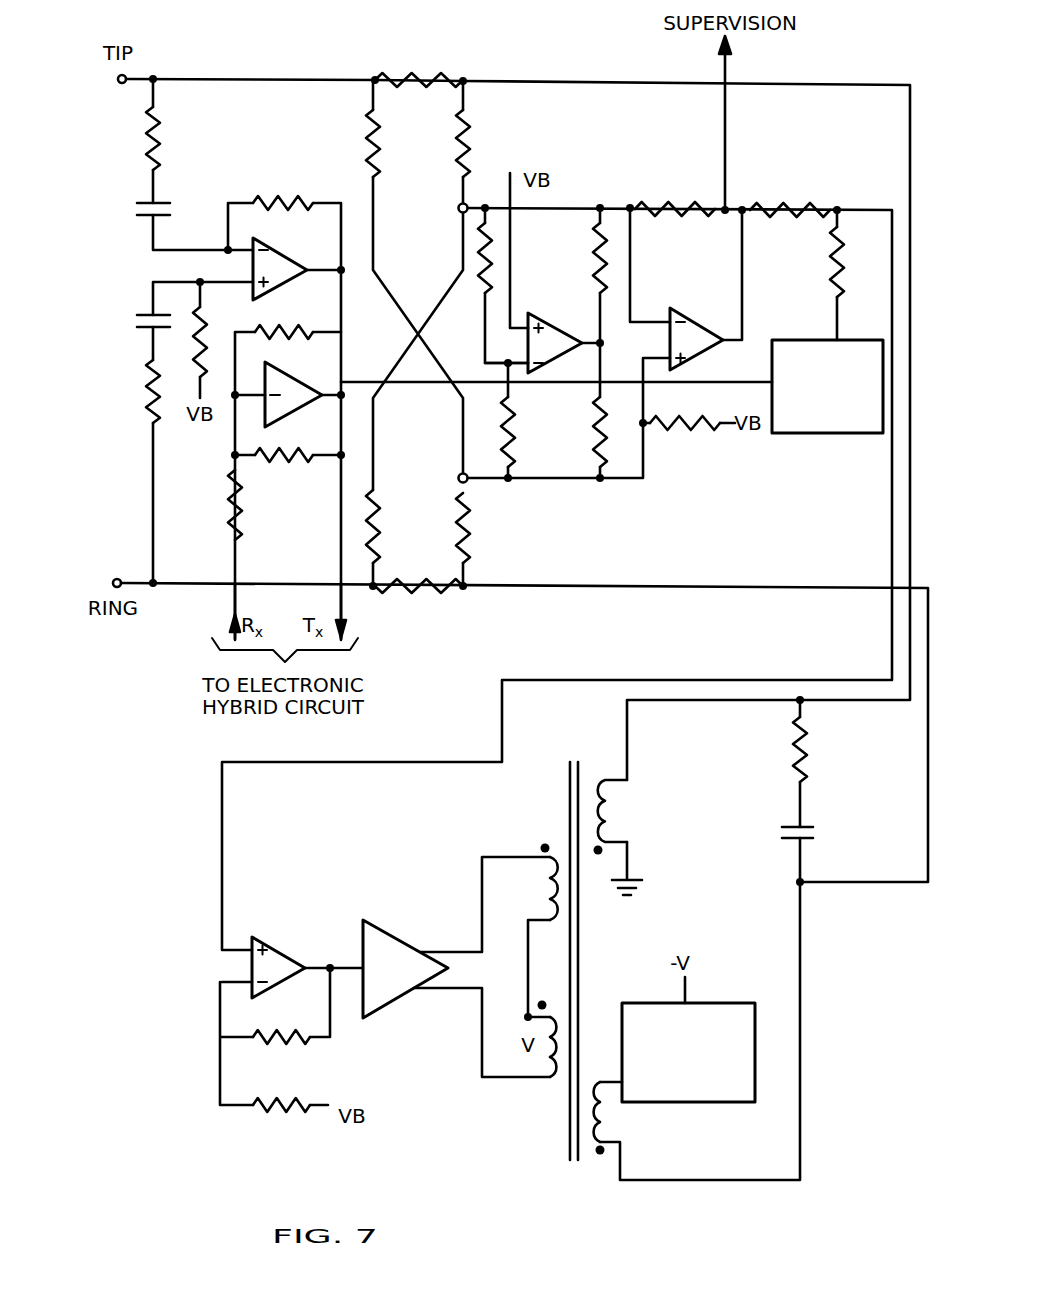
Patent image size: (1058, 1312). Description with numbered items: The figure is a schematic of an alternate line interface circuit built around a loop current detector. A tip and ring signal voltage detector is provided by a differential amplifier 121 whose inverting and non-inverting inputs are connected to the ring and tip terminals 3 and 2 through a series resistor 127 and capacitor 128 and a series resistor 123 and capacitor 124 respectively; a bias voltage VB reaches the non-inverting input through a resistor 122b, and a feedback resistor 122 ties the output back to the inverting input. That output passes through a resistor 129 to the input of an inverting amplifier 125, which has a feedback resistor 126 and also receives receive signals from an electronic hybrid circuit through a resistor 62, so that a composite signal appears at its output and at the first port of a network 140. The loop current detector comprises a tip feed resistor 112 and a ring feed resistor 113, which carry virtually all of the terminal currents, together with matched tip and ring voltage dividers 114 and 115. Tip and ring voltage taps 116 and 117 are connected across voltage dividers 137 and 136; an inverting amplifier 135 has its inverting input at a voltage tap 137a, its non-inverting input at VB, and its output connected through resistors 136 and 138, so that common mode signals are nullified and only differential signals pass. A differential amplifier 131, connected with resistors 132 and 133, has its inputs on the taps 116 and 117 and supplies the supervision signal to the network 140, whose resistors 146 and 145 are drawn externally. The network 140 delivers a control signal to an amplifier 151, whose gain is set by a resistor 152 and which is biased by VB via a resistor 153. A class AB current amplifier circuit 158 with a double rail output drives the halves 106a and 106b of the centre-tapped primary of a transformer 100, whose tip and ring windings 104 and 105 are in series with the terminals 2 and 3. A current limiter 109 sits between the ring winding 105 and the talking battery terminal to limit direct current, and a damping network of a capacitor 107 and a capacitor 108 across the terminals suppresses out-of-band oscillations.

The tip terminal 2 is at (119, 84).
The ring terminal 3 is at (119, 579).
The resistor 62 is at (231, 518).
The transformer 100 is at (623, 940).
The tip winding 104 is at (608, 800).
The ring winding 105 is at (604, 1107).
The primary winding half 106a is at (548, 872).
The primary winding half 106b is at (541, 1080).
The capacitor 107 is at (815, 833).
The capacitor 108 is at (793, 741).
The current limiter 109 is at (651, 1003).
The tip feed resistor 112 is at (430, 78).
The ring feed resistor 113 is at (424, 592).
The tip voltage divider 114 is at (457, 289).
The ring voltage divider 115 is at (409, 316).
The tip voltage tap 116 is at (457, 209).
The ring voltage tap 117 is at (458, 476).
The differential amplifier 121 is at (282, 261).
The feedback resistor 122 is at (297, 200).
The resistor 122b is at (205, 310).
The resistor 123 is at (148, 148).
The capacitor 124 is at (140, 216).
The inverting amplifier 125 is at (288, 386).
The feedback resistor 126 is at (268, 460).
The resistor 127 is at (147, 400).
The capacitor 128 is at (140, 327).
The resistor 129 is at (272, 330).
The differential amplifier 131 is at (704, 312).
The resistor 132 is at (697, 205).
The resistor 133 is at (699, 432).
The inverting amplifier 135 is at (528, 318).
The voltage divider 136 is at (597, 393).
The voltage divider 137 is at (510, 392).
The voltage tap 137a is at (506, 368).
The resistor 138 is at (595, 258).
The network 140 is at (823, 438).
The resistor 145 is at (803, 206).
The resistor 146 is at (830, 262).
The amplifier 151 is at (275, 944).
The resistor 152 is at (270, 1048).
The resistor 153 is at (270, 1116).
The class AB current amplifier circuit 158 is at (400, 932).